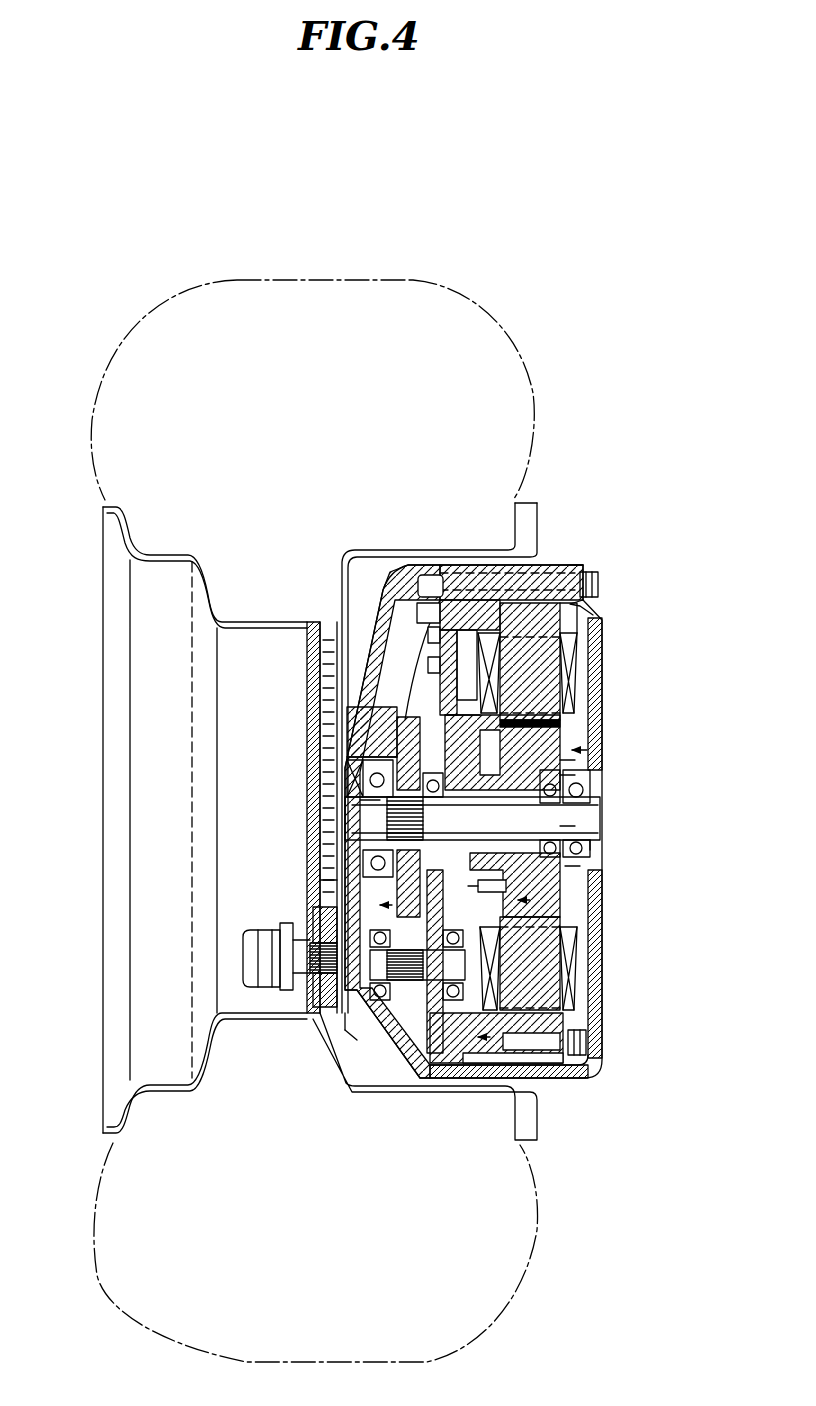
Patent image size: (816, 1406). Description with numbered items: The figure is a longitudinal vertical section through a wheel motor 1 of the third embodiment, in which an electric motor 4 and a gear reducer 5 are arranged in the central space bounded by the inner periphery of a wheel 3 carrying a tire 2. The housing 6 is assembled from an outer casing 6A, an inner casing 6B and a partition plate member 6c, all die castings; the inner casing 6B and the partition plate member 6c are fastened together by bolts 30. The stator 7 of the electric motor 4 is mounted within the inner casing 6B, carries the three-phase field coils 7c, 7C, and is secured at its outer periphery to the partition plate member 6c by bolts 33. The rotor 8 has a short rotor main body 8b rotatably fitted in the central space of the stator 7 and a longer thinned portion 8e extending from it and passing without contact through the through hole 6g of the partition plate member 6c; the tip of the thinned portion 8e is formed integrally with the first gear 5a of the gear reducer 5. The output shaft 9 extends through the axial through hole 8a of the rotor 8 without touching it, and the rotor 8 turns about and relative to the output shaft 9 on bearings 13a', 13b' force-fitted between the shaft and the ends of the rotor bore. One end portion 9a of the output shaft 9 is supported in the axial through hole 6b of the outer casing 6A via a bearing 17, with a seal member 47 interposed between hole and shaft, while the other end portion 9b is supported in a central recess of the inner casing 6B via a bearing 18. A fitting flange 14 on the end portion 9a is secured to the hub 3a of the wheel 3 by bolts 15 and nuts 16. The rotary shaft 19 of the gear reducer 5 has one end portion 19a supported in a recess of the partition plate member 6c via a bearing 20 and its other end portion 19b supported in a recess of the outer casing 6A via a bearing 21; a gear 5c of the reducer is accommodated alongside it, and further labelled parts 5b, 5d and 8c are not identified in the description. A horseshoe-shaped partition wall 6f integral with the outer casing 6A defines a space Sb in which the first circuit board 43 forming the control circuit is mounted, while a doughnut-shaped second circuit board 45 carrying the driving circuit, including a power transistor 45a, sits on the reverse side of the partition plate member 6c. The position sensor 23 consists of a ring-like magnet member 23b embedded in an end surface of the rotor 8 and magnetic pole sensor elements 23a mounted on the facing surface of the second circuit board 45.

The wheel motor 1 is at (615, 418).
The tire 2 is at (537, 392).
The wheel 3 is at (160, 558).
The hub 3a is at (303, 1010).
The electric motor 4 is at (576, 762).
The gear reducer 5 is at (362, 872).
The first gear 5a is at (395, 750).
The hub shaft portion 5b is at (432, 1047).
The gear 5c is at (400, 1022).
The hub end portion 5d is at (365, 757).
The housing 6 is at (579, 1093).
The outer casing 6A is at (380, 650).
The inner casing 6B is at (593, 695).
The axial through hole 6b is at (380, 800).
The partition plate member 6c is at (570, 565).
The partition wall 6f is at (383, 672).
The through hole 6g is at (420, 635).
The stator 7 is at (600, 622).
The field coils 7c is at (578, 645).
The field coils 7C is at (563, 675).
The rotor 8 is at (566, 787).
The axial through hole 8a is at (581, 870).
The rotor main body 8b is at (561, 778).
The rotor cylindrical portion 8c is at (561, 718).
The thinned portion 8e is at (561, 828).
The output shaft 9 is at (581, 812).
The end portion 9a is at (360, 815).
The other end portion 9b is at (591, 842).
The bearing 13a' is at (656, 786).
The bearing 13b' is at (648, 877).
The fitting flange 14 is at (313, 890).
The bolts 15 is at (263, 960).
The nuts 16 is at (263, 937).
The bearing 17 is at (385, 842).
The bearing 18 is at (601, 855).
The rotary shaft 19 is at (372, 986).
The end portion 19a is at (412, 1042).
The other end portion 19b is at (335, 1006).
The bearing 20 is at (583, 1043).
The bearing 21 is at (345, 1022).
The position sensor 23 is at (561, 960).
The magnetic pole sensor elements 23a is at (573, 1012).
The ring-like magnet member 23b is at (561, 925).
The bolts 30 is at (592, 571).
The bolts 33 is at (589, 1053).
The first circuit board 43 is at (462, 640).
The second circuit board 45 is at (586, 660).
The power transistor 45a is at (601, 725).
The seal member 47 is at (385, 780).
The space Sb is at (395, 590).